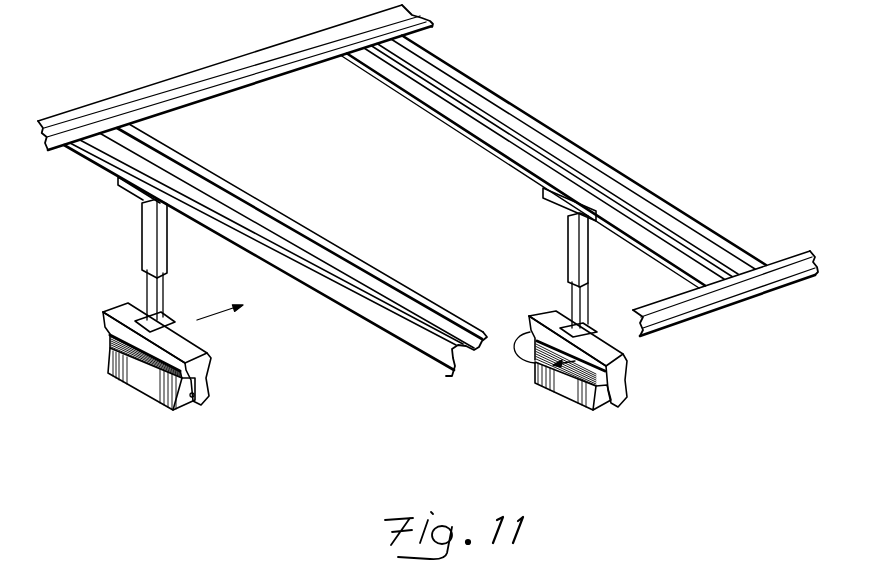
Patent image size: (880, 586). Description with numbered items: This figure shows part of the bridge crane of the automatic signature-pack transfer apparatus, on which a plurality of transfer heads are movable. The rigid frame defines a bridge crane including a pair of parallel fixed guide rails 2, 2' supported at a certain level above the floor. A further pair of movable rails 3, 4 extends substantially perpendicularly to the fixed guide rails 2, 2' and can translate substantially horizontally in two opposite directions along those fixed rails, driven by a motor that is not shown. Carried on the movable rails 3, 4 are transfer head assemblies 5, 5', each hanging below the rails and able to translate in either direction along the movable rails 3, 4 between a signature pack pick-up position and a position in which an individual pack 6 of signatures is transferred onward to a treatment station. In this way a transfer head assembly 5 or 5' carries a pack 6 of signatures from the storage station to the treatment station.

The fixed guide rail 2 is at (235, 76).
The fixed guide rail 2' is at (725, 312).
The movable rail 3 is at (307, 277).
The movable rail 4 is at (413, 305).
The transfer head assembly 5 is at (547, 262).
The transfer head assembly 5' is at (110, 254).
The pack of signatures 6 is at (153, 390).